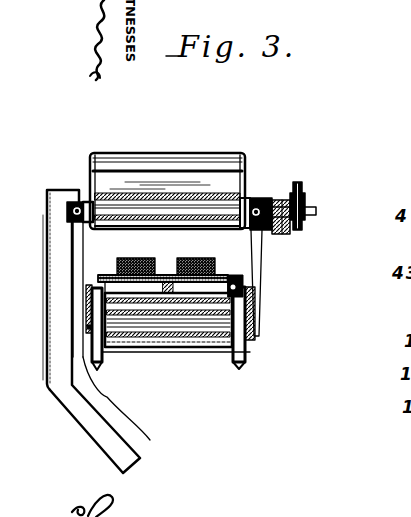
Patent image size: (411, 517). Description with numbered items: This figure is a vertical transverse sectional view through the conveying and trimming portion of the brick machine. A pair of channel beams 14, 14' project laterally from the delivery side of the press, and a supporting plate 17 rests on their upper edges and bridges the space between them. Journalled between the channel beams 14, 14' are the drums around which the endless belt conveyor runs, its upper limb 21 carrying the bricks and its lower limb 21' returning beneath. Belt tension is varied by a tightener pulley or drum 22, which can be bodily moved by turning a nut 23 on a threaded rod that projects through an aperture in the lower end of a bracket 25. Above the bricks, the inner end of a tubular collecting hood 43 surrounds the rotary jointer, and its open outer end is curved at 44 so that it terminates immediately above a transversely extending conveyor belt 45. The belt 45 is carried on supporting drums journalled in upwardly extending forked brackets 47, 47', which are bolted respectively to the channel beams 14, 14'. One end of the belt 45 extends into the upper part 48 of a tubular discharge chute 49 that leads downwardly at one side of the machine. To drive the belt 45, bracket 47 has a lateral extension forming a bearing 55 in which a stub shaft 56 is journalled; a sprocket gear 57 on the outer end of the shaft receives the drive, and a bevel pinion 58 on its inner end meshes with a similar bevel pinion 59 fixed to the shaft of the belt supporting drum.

The channel beam 14 is at (283, 322).
The channel beam 14' is at (148, 425).
The supporting plate 17 is at (240, 276).
The upper limb of endless belt conveyor 21 is at (163, 264).
The lower limb of endless belt conveyor 21' is at (168, 340).
The tightener pulley or drum 22 is at (210, 325).
The nut 23 is at (240, 369).
The bracket 25 is at (247, 362).
The tubular collecting hood 43 is at (246, 165).
The curved end of hood 44 is at (166, 153).
The conveyor belt 45 is at (73, 202).
The forked bracket 47 is at (299, 268).
The forked bracket 47' is at (102, 279).
The upper part of discharge chute 48 is at (63, 190).
The tubular discharge chute 49 is at (58, 347).
The bearing 55 is at (282, 232).
The stub shaft 56 is at (284, 205).
The sprocket gear 57 is at (300, 187).
The bevel pinion 58 is at (285, 190).
The bevel pinion 59 is at (273, 203).